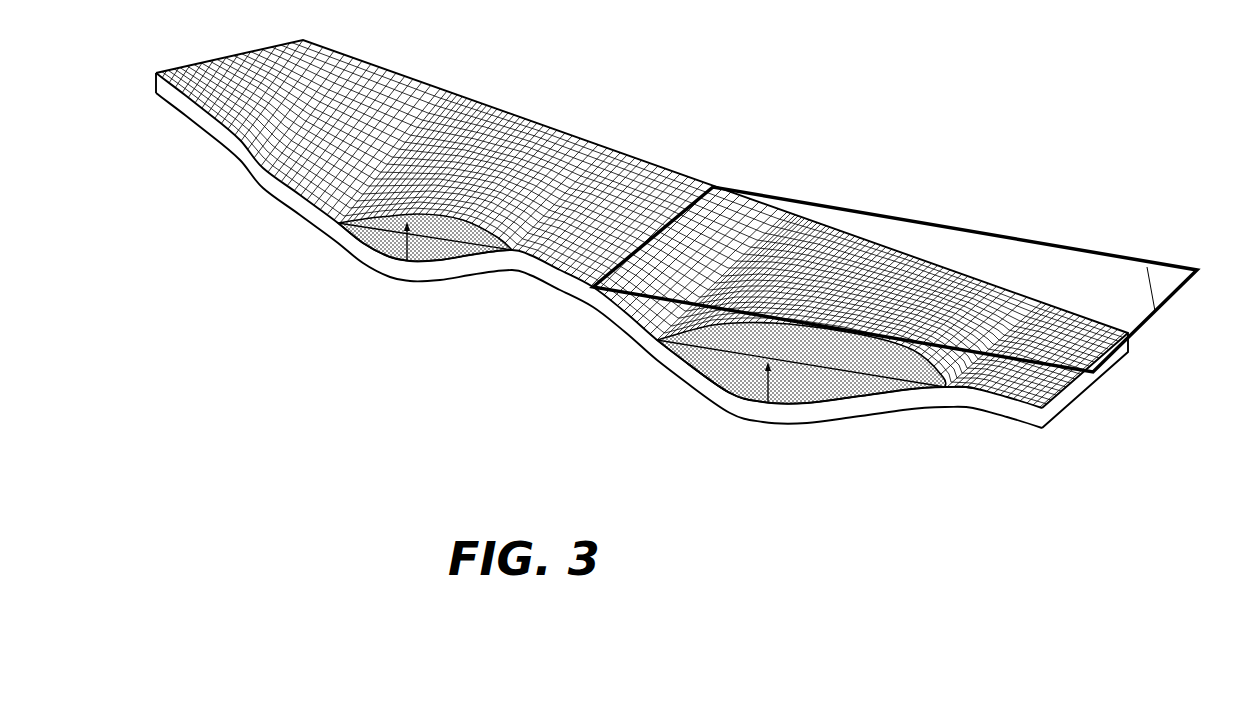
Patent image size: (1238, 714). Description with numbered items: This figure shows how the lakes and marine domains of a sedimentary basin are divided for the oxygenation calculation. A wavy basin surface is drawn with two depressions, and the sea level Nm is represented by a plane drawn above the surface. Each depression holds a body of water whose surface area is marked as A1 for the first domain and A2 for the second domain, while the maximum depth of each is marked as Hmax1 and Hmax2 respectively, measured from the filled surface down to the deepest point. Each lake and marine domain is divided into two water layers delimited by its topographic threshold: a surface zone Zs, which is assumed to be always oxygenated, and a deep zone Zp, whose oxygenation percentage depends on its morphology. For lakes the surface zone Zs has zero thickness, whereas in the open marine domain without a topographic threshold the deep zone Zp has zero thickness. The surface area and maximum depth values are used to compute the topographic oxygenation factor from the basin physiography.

The sea level Nm is at (1000, 237).
The surface area of the lake or marine domain A1 is at (425, 237).
The surface area of the lake or marine domain A2 is at (801, 362).
The maximum depth of the lake or marine domain Hmax1 is at (415, 272).
The maximum depth of the lake or marine domain Hmax2 is at (763, 413).
The deep zone Zp is at (722, 372).
The surface zone Zs is at (955, 388).